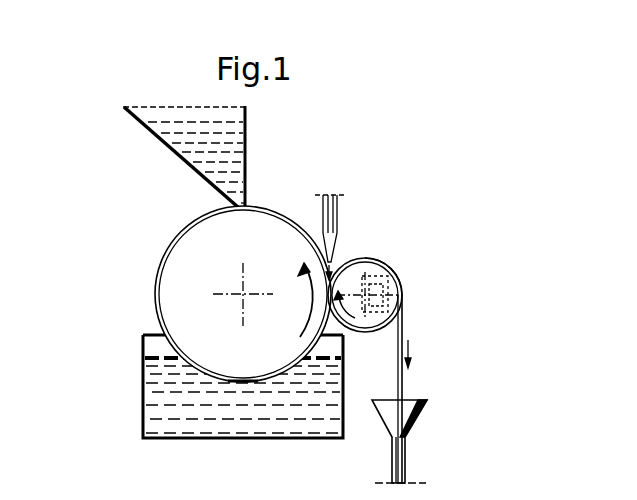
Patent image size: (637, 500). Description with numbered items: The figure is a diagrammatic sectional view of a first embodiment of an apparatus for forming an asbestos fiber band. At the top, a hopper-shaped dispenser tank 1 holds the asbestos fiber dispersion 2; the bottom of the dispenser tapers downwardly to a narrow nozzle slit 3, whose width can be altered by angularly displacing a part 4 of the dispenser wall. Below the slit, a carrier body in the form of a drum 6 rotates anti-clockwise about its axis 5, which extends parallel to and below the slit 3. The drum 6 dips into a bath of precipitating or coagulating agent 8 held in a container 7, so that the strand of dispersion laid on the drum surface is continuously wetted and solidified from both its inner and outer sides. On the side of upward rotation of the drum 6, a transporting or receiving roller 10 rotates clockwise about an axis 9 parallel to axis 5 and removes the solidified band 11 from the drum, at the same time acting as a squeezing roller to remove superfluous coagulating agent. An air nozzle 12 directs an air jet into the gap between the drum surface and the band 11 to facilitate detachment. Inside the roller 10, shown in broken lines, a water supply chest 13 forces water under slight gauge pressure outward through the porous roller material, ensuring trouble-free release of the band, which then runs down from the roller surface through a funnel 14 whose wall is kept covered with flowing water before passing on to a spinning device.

The dispenser tank 1 is at (247, 129).
The asbestos fiber dispersion 2 is at (228, 156).
The nozzle slit 3 is at (246, 191).
The dispenser wall part 4 is at (186, 167).
The drum axis 5 is at (246, 292).
The drum 6 is at (308, 228).
The container 7 is at (143, 359).
The coagulating agent 8 is at (287, 420).
The roller axis 9 is at (402, 297).
The transporting roller 10 is at (366, 332).
The fiber band 11 is at (157, 274).
The air nozzle 12 is at (337, 220).
The water supply chest 13 is at (385, 277).
The funnel 14 is at (406, 431).